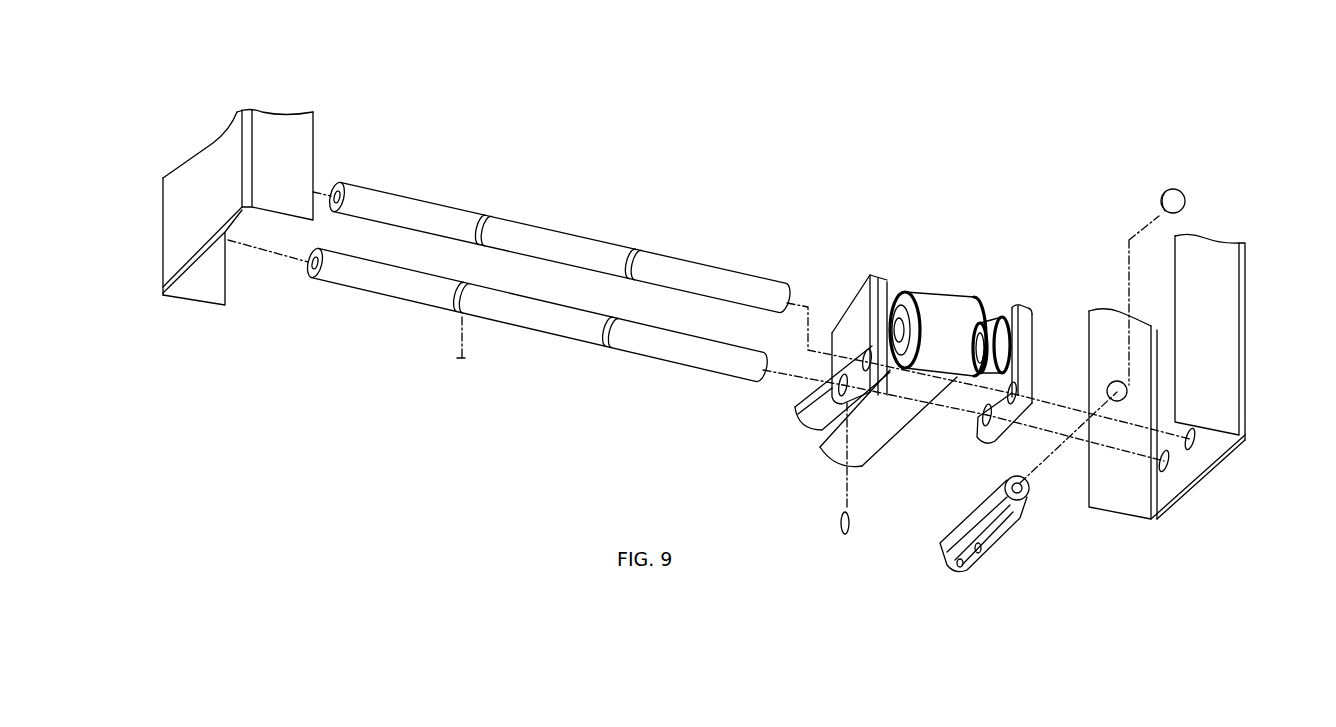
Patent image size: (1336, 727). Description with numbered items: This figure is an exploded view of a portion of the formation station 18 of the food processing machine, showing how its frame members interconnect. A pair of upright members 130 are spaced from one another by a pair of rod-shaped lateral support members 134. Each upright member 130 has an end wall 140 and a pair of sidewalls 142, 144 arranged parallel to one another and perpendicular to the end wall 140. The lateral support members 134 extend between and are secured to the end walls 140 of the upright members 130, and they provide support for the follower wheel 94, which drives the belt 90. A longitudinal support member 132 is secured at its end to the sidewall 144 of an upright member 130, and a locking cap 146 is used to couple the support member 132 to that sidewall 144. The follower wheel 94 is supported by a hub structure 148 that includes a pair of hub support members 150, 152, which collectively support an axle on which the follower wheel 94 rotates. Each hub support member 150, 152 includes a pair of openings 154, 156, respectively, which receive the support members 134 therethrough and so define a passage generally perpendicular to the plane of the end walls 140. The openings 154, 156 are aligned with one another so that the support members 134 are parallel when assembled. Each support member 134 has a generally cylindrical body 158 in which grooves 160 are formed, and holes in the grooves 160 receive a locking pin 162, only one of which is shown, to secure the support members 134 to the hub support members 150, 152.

The formation station 18 is at (1259, 194).
The belt 90 is at (878, 437).
The follower wheel 94 is at (980, 323).
The upright member 130 is at (193, 112).
The longitudinal support member 132 is at (950, 533).
The lateral support member 134 is at (538, 210).
The end wall 140 is at (193, 210).
The sidewall 142 is at (278, 125).
The sidewall 144 is at (217, 297).
The locking cap 146 is at (1181, 201).
The hub structure 148 is at (903, 270).
The hub support member 150 is at (852, 317).
The hub support member 152 is at (1028, 340).
The openings 154 is at (838, 378).
The openings 156 is at (980, 403).
The cylindrical body 158 is at (525, 330).
The grooves 160 is at (482, 217).
The locking pin 162 is at (838, 525).